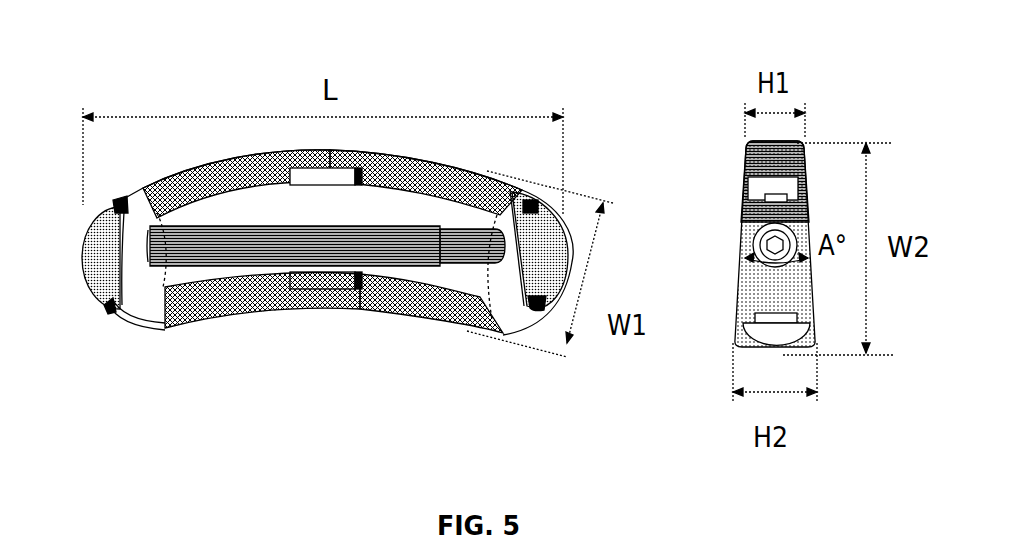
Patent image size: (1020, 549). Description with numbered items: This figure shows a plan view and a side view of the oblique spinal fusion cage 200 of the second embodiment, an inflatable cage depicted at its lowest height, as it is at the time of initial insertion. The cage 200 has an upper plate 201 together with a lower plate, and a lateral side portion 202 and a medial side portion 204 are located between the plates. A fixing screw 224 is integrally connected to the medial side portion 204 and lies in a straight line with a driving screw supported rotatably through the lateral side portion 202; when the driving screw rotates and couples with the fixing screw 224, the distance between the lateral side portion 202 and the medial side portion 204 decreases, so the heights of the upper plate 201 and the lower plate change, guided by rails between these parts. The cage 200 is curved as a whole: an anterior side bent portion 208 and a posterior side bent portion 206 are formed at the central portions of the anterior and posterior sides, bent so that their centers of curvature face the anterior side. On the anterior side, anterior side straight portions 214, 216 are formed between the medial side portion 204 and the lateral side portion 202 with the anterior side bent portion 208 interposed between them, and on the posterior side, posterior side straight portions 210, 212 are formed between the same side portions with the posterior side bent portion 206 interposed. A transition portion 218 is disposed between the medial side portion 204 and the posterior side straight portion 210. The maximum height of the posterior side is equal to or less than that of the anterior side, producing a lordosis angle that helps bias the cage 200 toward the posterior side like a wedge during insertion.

The oblique spinal fusion cage 200 is at (133, 52).
The upper plate 201 is at (273, 150).
The lateral side portion 202 is at (547, 277).
The medial side portion 204 is at (93, 270).
The posterior side bent portion 206 is at (348, 154).
The anterior side bent portion 208 is at (333, 298).
The posterior side straight portion 210 is at (220, 168).
The posterior side straight portion 212 is at (442, 162).
The anterior side straight portion 214 is at (230, 308).
The anterior side straight portion 216 is at (400, 307).
The transition portion 218 is at (110, 208).
The fixing screw 224 is at (227, 253).